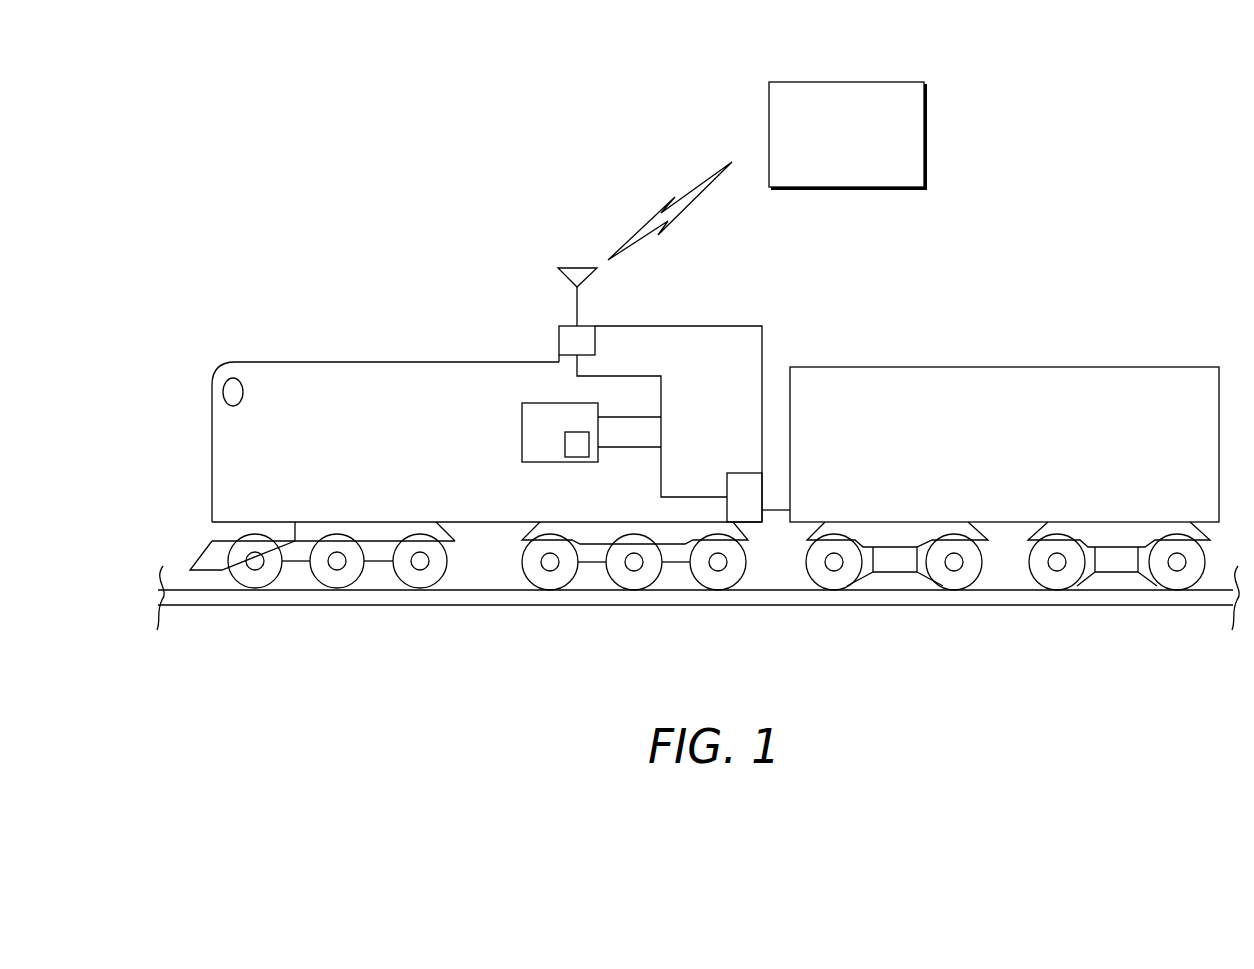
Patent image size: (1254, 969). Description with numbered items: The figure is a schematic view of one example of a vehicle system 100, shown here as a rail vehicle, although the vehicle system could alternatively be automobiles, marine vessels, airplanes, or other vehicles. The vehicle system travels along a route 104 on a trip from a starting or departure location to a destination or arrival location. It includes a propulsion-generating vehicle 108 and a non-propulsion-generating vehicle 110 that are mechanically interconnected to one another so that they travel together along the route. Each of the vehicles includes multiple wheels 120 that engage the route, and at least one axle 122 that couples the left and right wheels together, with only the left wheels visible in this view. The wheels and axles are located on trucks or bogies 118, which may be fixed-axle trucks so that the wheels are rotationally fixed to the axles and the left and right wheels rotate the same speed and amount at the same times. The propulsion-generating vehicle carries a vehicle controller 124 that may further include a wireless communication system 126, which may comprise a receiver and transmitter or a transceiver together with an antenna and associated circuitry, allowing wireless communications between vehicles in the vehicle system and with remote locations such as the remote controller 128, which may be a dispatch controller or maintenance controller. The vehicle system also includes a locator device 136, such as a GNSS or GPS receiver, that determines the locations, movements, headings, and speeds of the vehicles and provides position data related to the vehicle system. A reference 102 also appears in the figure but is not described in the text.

The vehicle system 100 is at (450, 312).
The control system of locomotive 102 is at (626, 395).
The route 104 is at (197, 618).
The propulsion-generating vehicle 108 is at (363, 360).
The non-propulsion-generating vehicle 110 is at (1113, 457).
The truck 118 is at (893, 535).
The wheels 120 is at (560, 580).
The axle 122 is at (549, 571).
The vehicle controller 124 is at (522, 408).
The wireless communication system 126 is at (559, 330).
The remote controller 128 is at (898, 82).
The locator device 136 is at (565, 444).